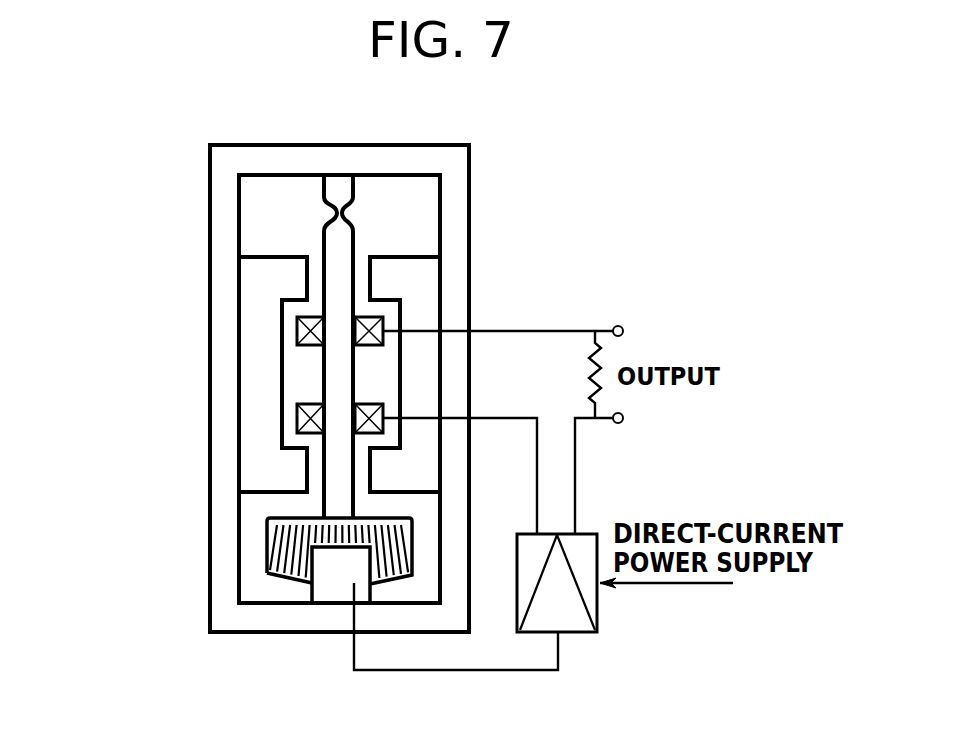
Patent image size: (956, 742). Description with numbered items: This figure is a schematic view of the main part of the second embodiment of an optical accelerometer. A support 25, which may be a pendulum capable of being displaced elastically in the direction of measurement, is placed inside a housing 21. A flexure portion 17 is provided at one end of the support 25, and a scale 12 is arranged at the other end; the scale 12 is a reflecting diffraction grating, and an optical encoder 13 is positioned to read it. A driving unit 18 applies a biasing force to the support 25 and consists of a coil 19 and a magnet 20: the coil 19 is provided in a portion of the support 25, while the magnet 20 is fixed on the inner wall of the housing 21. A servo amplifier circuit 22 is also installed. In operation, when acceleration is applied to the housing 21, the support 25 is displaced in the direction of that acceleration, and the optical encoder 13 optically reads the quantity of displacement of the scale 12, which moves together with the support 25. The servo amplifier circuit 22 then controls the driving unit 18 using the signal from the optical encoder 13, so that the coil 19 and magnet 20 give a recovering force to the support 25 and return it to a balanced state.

The scale 12 is at (277, 533).
The optical encoder 13 is at (321, 593).
The flexure portion 17 is at (340, 212).
The driving unit 18 is at (108, 318).
The coil 19 is at (297, 330).
The magnet 20 is at (258, 415).
The housing 21 is at (225, 619).
The servo amplifier circuit 22 is at (571, 617).
The support 25 is at (333, 250).